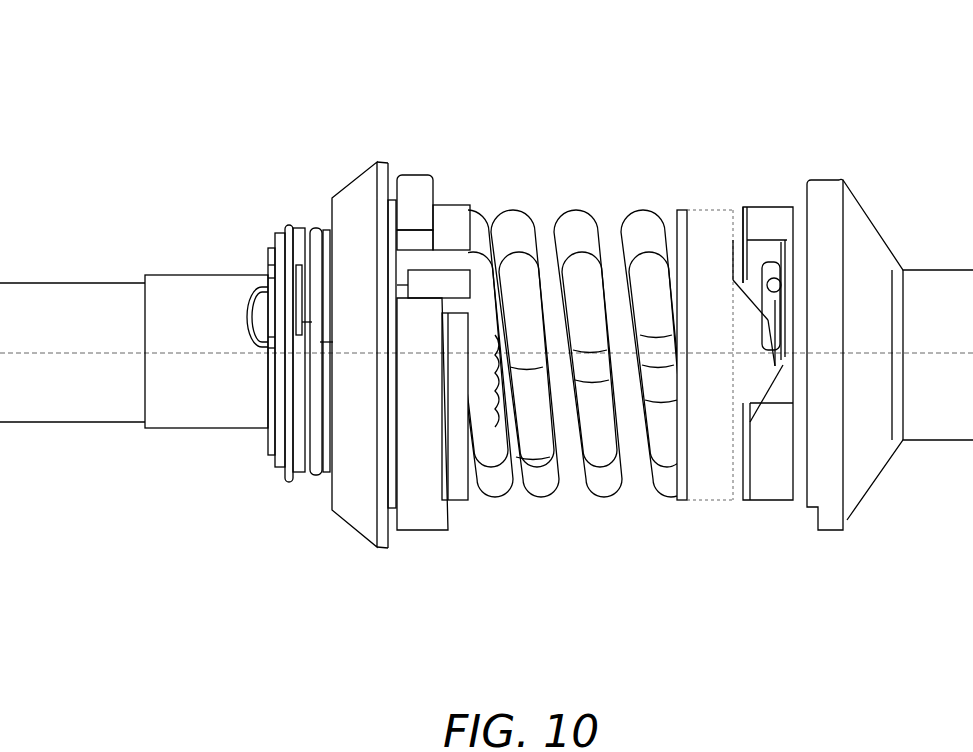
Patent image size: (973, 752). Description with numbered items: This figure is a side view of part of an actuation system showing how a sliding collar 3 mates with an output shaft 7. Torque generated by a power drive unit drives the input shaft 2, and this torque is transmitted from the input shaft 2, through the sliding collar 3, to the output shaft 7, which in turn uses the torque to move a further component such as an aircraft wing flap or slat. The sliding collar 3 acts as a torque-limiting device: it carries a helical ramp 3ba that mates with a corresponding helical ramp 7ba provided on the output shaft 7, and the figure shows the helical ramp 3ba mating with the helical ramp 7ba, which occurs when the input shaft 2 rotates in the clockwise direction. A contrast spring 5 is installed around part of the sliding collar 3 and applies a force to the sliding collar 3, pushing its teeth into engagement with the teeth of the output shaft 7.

The input shaft 2 is at (225, 385).
The sliding collar 3 is at (710, 223).
The helical ramp 3ba is at (780, 365).
The contrast spring 5 is at (532, 438).
The output shaft 7 is at (780, 472).
The helical ramp 7ba is at (748, 393).